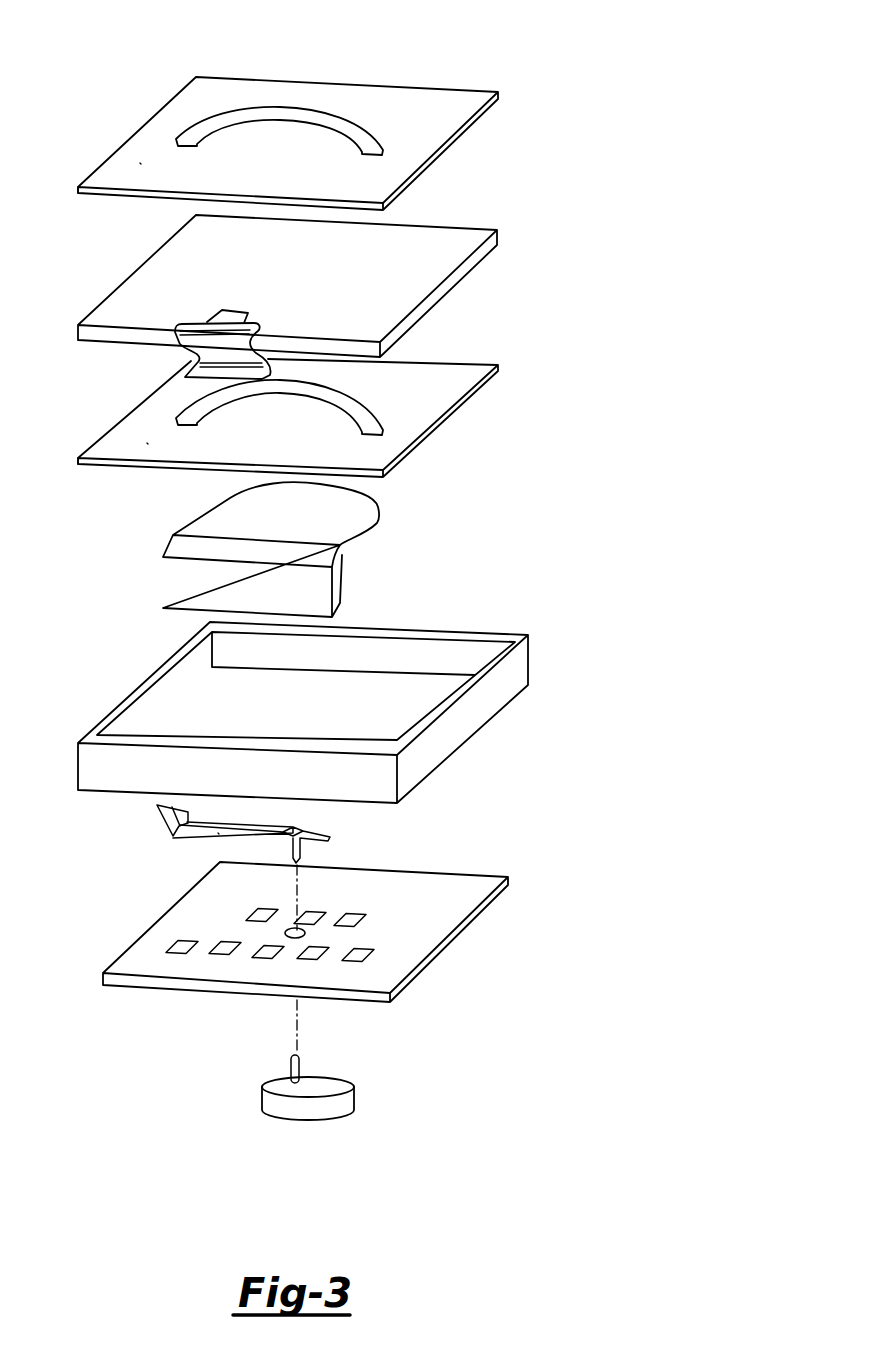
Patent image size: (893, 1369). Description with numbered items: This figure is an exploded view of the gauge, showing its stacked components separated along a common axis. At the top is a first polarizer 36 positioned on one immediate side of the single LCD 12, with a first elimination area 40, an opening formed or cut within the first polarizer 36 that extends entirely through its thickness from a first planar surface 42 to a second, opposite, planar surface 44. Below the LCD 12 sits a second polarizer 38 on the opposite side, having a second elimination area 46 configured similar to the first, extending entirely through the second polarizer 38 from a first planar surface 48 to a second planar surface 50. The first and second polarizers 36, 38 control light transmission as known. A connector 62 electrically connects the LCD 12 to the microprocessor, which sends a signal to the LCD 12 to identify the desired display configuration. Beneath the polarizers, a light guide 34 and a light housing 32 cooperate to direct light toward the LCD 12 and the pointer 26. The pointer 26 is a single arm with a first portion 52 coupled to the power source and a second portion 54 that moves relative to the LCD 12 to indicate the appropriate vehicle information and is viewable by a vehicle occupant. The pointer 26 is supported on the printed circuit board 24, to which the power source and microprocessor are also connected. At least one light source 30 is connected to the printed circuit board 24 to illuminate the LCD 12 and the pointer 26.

The LCD 12 is at (413, 250).
The printed circuit board 24 is at (423, 912).
The pointer 26 is at (218, 833).
The light source 30 is at (307, 1127).
The light housing 32 is at (437, 660).
The light guide 34 is at (350, 514).
The first polarizer 36 is at (428, 108).
The second polarizer 38 is at (435, 382).
The first elimination area 40 is at (302, 112).
The first planar surface 42 is at (140, 163).
The second planar surface 44 is at (130, 195).
The second elimination area 46 is at (355, 396).
The first planar surface 48 is at (147, 443).
The second planar surface 50 is at (163, 470).
The first portion 52 is at (305, 836).
The second portion 54 is at (157, 812).
The connector 62 is at (217, 350).